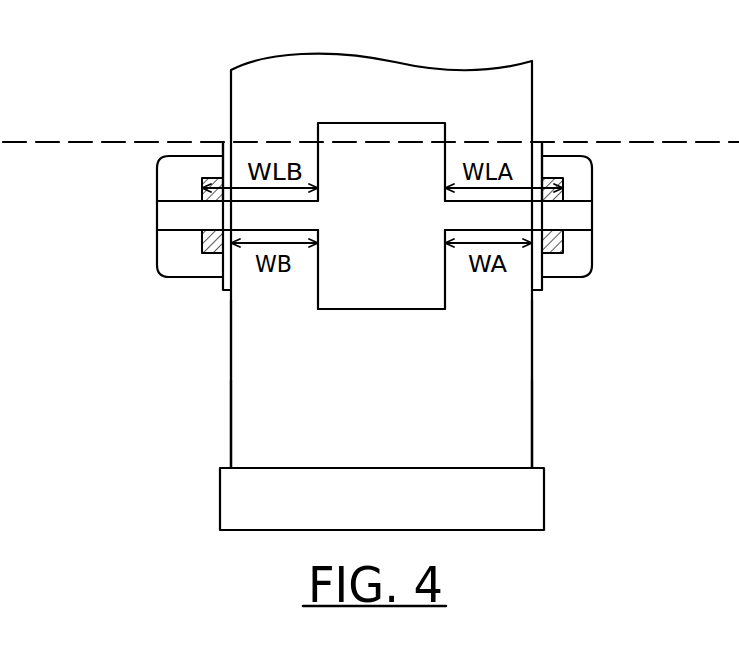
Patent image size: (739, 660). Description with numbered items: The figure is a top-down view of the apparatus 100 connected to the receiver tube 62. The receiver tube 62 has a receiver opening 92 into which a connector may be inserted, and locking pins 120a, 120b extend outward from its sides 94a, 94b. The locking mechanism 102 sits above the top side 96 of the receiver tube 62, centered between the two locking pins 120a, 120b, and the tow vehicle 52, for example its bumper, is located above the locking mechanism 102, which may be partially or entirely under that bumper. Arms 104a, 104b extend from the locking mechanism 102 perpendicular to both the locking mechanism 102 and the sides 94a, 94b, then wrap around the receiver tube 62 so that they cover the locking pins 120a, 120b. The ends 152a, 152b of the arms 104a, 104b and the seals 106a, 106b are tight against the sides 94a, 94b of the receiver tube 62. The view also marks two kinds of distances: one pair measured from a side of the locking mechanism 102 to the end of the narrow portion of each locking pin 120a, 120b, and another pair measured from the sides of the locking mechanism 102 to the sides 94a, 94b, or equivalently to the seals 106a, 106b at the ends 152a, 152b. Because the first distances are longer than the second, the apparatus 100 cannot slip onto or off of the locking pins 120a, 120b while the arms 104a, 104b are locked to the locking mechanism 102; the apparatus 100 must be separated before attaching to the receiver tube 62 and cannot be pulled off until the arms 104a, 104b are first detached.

The tow vehicle 52 is at (70, 143).
The receiver tube 62 is at (398, 77).
The receiver opening 92 is at (544, 500).
The side of the receiver tube 94a is at (533, 394).
The side of the receiver tube 94b is at (231, 394).
The top side of the receiver tube 96 is at (400, 442).
The apparatus 100 is at (385, 310).
The locking mechanism 102 is at (400, 223).
The arm 104a is at (587, 213).
The arm 104b is at (168, 214).
The seal 106a is at (536, 146).
The seal 106b is at (229, 146).
The locking pin 120a is at (552, 254).
The locking pin 120b is at (211, 254).
The end of the arm 152a is at (587, 258).
The end of the arm 152b is at (168, 264).